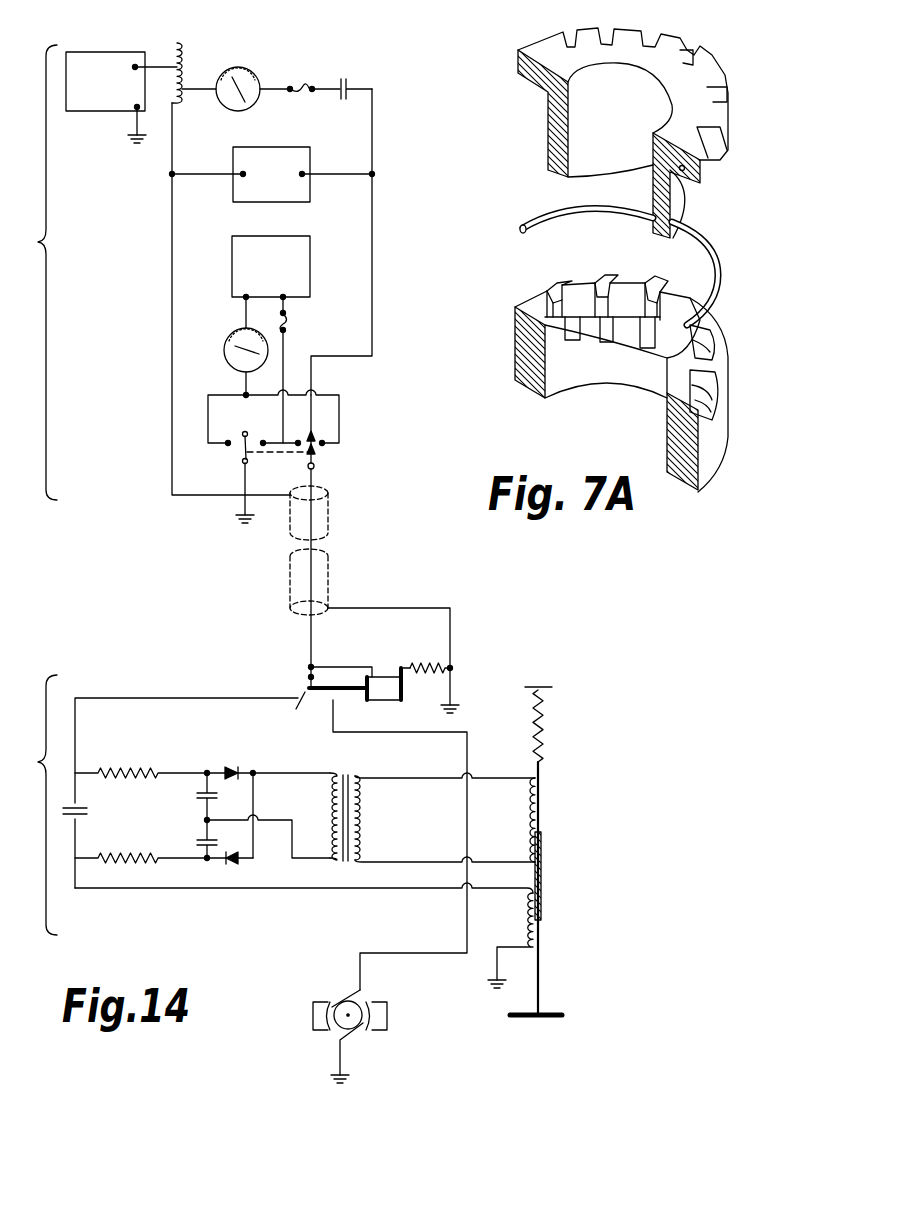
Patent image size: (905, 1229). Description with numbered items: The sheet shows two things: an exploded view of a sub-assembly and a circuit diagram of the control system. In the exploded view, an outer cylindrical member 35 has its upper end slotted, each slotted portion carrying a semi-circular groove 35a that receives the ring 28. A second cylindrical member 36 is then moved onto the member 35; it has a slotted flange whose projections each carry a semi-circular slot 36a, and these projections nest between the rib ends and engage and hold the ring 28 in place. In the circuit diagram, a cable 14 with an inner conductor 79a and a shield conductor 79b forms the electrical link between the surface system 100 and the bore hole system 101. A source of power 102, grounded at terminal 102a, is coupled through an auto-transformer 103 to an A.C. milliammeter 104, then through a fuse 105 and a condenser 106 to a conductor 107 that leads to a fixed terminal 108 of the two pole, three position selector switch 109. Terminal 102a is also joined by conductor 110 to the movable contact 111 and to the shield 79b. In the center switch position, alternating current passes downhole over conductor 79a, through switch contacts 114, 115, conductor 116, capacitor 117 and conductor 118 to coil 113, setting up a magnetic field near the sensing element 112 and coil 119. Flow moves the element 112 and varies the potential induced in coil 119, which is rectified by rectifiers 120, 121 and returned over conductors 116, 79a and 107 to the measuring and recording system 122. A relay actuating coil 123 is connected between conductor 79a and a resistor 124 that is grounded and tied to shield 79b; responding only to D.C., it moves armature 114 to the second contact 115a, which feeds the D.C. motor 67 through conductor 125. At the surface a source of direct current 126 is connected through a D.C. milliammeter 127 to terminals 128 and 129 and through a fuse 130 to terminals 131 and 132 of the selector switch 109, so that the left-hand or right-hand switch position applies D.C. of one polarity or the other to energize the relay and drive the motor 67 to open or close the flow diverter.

In FIG. 14, the surface system 100 is at (73, 272).
In FIG. 14, the bore hole system 101 is at (35, 805).
In FIG. 14, the source of power 102 is at (121, 81).
In FIG. 14, the ground terminal 102a is at (136, 106).
In FIG. 14, the auto-transformer 103 is at (187, 63).
In FIG. 14, the A.C. milliammeter 104 is at (257, 80).
In FIG. 14, the fuse 105 is at (305, 87).
In FIG. 14, the condenser 106 is at (350, 90).
In FIG. 14, the conductor 107 is at (373, 217).
In FIG. 14, the fixed terminal 108 is at (312, 434).
In FIG. 14, the selector switch 109 is at (294, 476).
In FIG. 14, the conductor 110 is at (172, 335).
In FIG. 14, the movable contact 111 is at (243, 445).
In FIG. 14, the sensing element 112 is at (540, 990).
In FIG. 14, the coil 113 is at (523, 917).
In FIG. 14, the armature 114 is at (308, 686).
In FIG. 14, the first fixed contact 115 is at (299, 699).
In FIG. 14, the second relay contact 115a is at (325, 706).
In FIG. 14, the conductor 116 is at (205, 697).
In FIG. 14, the capacitor 117 is at (84, 814).
In FIG. 14, the conductor 118 is at (413, 890).
In FIG. 14, the coil 119 is at (524, 807).
In FIG. 14, the rectifier 120 is at (240, 771).
In FIG. 14, the rectifier 121 is at (232, 861).
In FIG. 14, the measuring and/or recording system 122 is at (272, 174).
In FIG. 14, the relay actuating coil 123 is at (372, 676).
In FIG. 14, the resistor 124 is at (393, 660).
In FIG. 14, the conductor 125 is at (468, 777).
In FIG. 14, the source of direct current 126 is at (271, 268).
In FIG. 14, the D.C. milliammeter 127 is at (230, 336).
In FIG. 14, the terminal 128 is at (324, 443).
In FIG. 14, the terminal 129 is at (226, 441).
In FIG. 14, the fuse 130 is at (285, 327).
In FIG. 14, the terminal 131 is at (262, 441).
In FIG. 14, the terminal 132 is at (299, 441).
In FIG. 14, the cable 14 is at (352, 549).
In FIG. 14, the inner conductor 79a is at (312, 522).
In FIG. 14, the shield conductor 79b is at (328, 577).
In FIG. 14, the motor 67 is at (340, 980).
In FIG. 7A, the second cylindrical member 36 is at (550, 128).
In FIG. 7A, the semi-circular slot 36a is at (686, 172).
In FIG. 7A, the ring 28 is at (720, 262).
In FIG. 7A, the outer cylindrical member 35 is at (712, 455).
In FIG. 7A, the semi-circular groove 35a is at (712, 378).